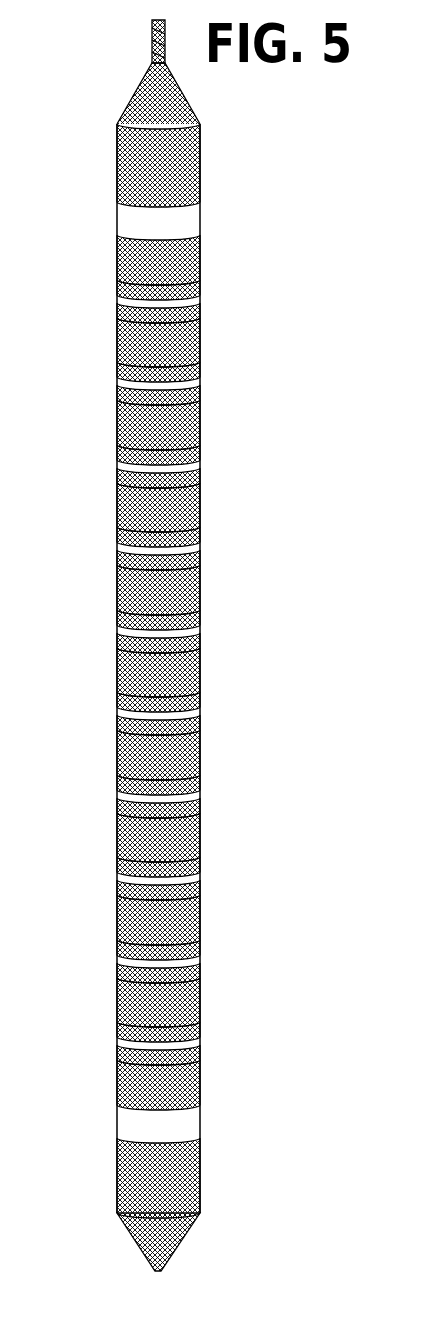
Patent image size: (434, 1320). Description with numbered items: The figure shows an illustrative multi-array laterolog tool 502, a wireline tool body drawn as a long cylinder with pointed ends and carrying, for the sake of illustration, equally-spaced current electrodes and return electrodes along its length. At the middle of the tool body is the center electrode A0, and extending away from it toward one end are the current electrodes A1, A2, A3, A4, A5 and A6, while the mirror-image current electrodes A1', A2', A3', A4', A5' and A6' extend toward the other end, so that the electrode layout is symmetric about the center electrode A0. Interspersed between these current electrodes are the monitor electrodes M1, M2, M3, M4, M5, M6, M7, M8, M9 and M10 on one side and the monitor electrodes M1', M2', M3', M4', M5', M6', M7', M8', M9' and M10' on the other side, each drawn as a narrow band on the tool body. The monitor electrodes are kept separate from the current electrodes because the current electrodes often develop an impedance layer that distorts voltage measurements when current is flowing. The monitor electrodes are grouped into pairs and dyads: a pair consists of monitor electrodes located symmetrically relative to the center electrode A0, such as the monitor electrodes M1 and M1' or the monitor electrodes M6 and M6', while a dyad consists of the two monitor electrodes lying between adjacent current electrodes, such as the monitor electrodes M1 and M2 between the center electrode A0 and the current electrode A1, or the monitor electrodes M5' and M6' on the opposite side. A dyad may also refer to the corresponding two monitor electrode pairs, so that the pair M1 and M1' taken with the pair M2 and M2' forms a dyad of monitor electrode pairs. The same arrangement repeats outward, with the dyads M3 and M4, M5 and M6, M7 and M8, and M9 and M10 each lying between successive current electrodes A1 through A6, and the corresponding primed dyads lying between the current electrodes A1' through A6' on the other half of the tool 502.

The multi-array laterolog tool 502 is at (120, 113).
The current electrode A6 is at (177, 165).
The current electrode A5 is at (177, 260).
The current electrode A4 is at (177, 342).
The current electrode A3 is at (177, 425).
The current electrode A2 is at (177, 507).
The current electrode A1 is at (177, 590).
The center electrode A0 is at (200, 668).
The current electrode A1' is at (180, 755).
The current electrode A2' is at (180, 837).
The current electrode A3' is at (180, 920).
The current electrode A4' is at (180, 1002).
The current electrode A5' is at (180, 1085).
The current electrode A6' is at (180, 1178).
The monitor electrode M10 is at (131, 286).
The monitor electrode M9 is at (133, 316).
The monitor electrode M8 is at (133, 368).
The monitor electrode M7 is at (133, 398).
The monitor electrode M6 is at (133, 451).
The monitor electrode M5 is at (133, 481).
The monitor electrode M4 is at (133, 533).
The monitor electrode M3 is at (133, 563).
The monitor electrode M2 is at (133, 616).
The monitor electrode M1 is at (133, 646).
The monitor electrode M1' is at (133, 698).
The monitor electrode M2' is at (133, 728).
The monitor electrode M3' is at (133, 781).
The monitor electrode M4' is at (133, 811).
The monitor electrode M5' is at (133, 863).
The monitor electrode M6' is at (133, 893).
The monitor electrode M7' is at (133, 946).
The monitor electrode M8' is at (133, 976).
The monitor electrode M9' is at (133, 1028).
The monitor electrode M10' is at (130, 1058).